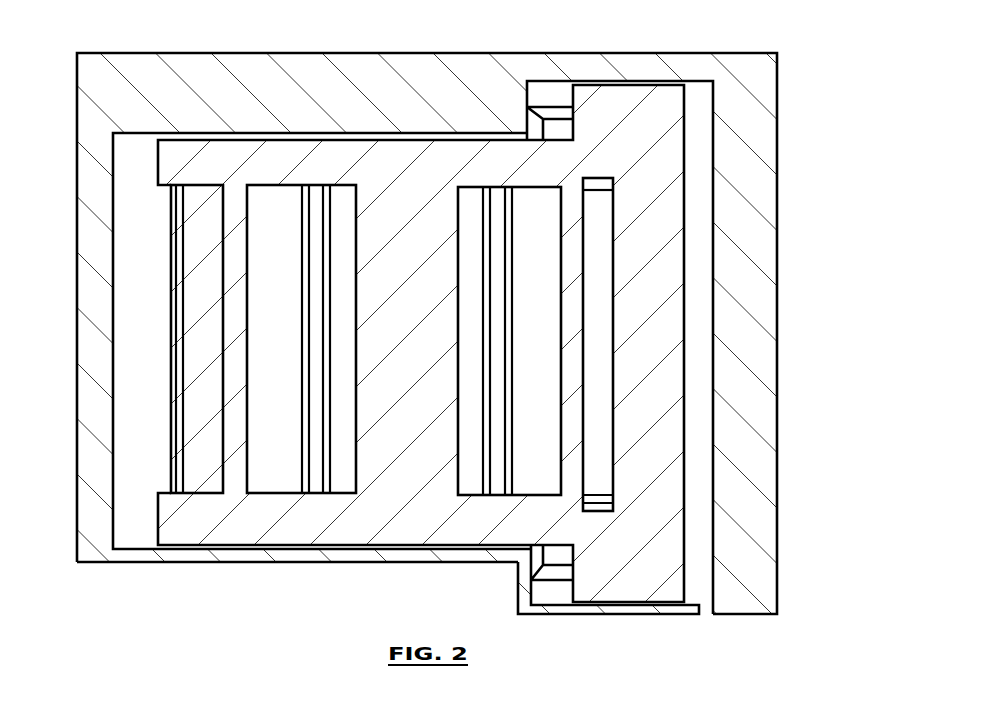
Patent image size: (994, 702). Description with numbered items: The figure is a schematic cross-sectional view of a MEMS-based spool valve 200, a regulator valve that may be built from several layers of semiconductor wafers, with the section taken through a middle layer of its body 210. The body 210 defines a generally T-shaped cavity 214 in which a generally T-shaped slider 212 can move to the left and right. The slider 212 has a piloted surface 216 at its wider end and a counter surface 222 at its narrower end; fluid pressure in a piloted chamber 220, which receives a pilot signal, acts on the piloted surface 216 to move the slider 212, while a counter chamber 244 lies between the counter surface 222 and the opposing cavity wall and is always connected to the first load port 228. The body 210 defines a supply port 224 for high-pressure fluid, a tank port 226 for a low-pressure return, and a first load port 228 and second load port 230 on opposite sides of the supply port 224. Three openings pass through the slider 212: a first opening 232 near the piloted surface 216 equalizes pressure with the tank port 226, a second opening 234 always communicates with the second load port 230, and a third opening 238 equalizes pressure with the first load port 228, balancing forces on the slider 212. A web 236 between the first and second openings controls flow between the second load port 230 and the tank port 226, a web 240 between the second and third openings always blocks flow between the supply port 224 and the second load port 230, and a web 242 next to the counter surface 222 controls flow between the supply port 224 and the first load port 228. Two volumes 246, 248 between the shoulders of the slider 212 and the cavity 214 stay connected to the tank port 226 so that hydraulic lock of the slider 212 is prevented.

The MEMS-based spool valve 200 is at (329, 592).
The body 210 is at (143, 94).
The slider 212 is at (623, 140).
The cavity 214 is at (693, 84).
The piloted surface 216 is at (687, 210).
The piloted chamber 220 is at (715, 578).
The counter surface 222 is at (217, 337).
The supply port 224 is at (318, 213).
The tank port 226 is at (603, 192).
The first load port 228 is at (185, 447).
The second load port 230 is at (498, 325).
The first opening 232 is at (610, 483).
The second opening 234 is at (558, 203).
The web 236 is at (572, 320).
The third opening 238 is at (245, 139).
The web 240 is at (425, 187).
The web 242 is at (238, 420).
The counter chamber 244 is at (113, 347).
The volume 246 is at (543, 562).
The volume 248 is at (563, 110).